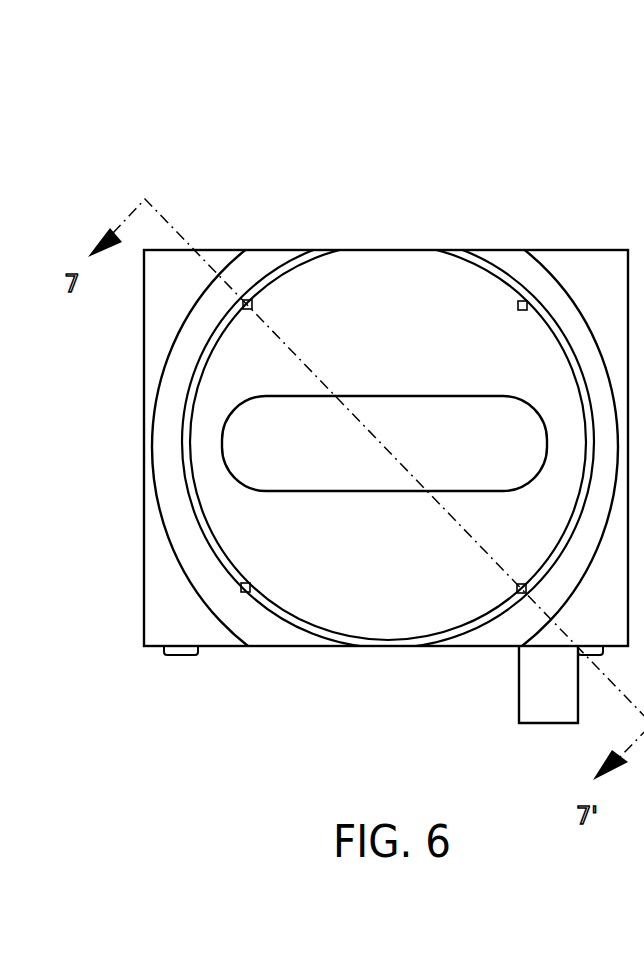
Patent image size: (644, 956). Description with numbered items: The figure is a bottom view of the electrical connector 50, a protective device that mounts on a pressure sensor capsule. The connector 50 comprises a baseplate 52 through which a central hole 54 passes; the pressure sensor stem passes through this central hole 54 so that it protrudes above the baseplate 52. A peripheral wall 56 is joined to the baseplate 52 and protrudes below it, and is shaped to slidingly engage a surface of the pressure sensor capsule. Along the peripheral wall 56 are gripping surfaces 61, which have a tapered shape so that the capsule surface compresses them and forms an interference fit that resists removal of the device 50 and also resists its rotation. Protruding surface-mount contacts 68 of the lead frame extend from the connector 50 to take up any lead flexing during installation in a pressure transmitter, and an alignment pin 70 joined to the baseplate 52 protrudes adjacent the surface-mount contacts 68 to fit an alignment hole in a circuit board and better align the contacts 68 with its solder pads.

The electrical connector 50 is at (190, 137).
The baseplate 52 is at (374, 573).
The central hole 54 is at (445, 491).
The peripheral wall 56 is at (143, 560).
The gripping surfaces 61 is at (252, 308).
The surface-mount contacts 68 is at (180, 658).
The alignment pin 70 is at (549, 723).